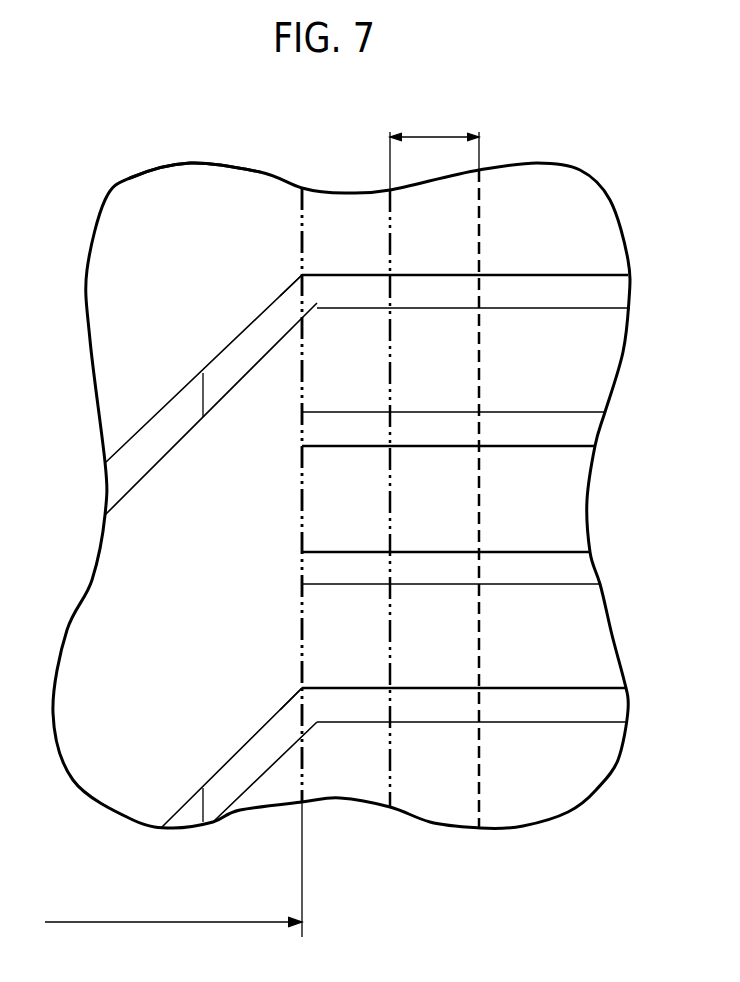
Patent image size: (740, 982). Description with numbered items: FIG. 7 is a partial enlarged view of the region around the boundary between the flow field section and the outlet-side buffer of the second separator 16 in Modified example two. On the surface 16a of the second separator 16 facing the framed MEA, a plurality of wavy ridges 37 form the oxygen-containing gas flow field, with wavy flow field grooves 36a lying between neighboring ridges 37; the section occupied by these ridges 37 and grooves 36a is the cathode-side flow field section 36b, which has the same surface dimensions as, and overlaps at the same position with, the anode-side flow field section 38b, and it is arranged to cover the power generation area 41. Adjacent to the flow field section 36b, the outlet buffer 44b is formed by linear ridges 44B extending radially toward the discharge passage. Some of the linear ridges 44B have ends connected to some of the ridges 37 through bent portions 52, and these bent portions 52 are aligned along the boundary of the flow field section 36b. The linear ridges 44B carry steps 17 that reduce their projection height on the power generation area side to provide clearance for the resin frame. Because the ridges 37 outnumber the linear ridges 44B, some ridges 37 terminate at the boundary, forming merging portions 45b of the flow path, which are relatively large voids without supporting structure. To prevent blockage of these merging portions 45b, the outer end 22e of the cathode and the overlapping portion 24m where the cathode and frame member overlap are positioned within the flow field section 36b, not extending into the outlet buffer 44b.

The second separator 16 is at (133, 163).
The surface 16a is at (215, 203).
The flow field section 36b is at (233, 495).
The flow field section 38b is at (302, 628).
The outer end of the cathode 22e is at (390, 740).
The power generation area 41 is at (479, 742).
The overlapping portion 24m is at (434, 148).
The ridges 37 is at (567, 428).
The wavy flow field grooves 36a is at (548, 242).
The merging portions 45b is at (266, 236).
The linear ridges 44B is at (120, 464).
The steps 17 is at (203, 392).
The bent portions 52 is at (328, 292).
The outlet buffer 44b is at (173, 869).